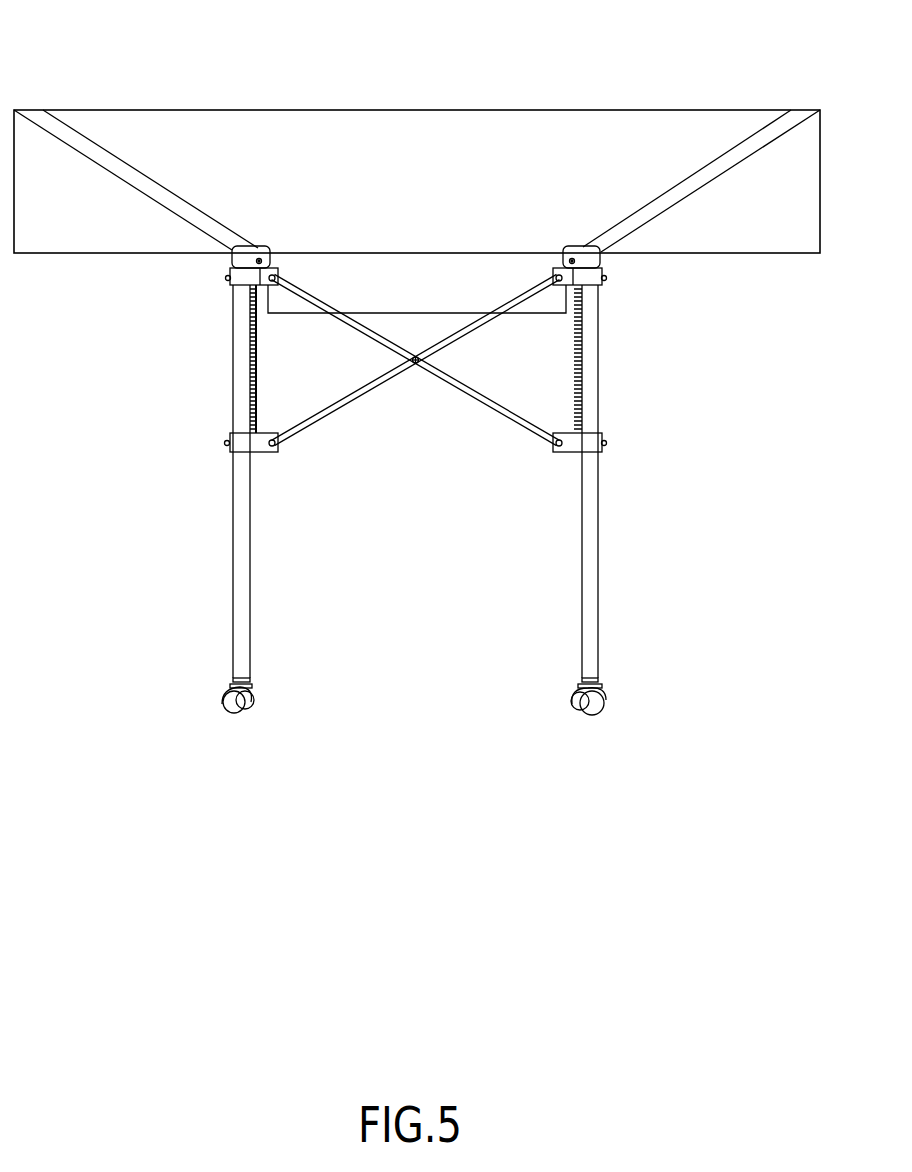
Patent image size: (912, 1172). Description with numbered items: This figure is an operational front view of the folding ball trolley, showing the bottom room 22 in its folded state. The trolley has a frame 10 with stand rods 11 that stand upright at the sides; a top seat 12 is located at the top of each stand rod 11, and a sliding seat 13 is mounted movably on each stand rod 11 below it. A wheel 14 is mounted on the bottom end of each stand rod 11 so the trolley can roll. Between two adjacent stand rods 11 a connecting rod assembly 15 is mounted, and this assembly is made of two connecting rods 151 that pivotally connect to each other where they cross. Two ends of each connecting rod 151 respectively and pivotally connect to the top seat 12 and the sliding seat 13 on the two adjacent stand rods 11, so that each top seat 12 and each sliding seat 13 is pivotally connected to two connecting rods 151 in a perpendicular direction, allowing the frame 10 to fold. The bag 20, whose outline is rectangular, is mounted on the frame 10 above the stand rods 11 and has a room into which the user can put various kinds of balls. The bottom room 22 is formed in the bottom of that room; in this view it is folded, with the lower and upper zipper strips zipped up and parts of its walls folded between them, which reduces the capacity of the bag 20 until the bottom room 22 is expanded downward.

The frame 10 is at (150, 483).
The stand rod 11 is at (242, 630).
The top seat 12 is at (240, 258).
The sliding seat 13 is at (256, 444).
The wheel 14 is at (236, 708).
The connecting rod assembly 15 is at (415, 403).
The connecting rod 151 is at (517, 416).
The bag 20 is at (118, 86).
The bottom room 22 is at (480, 295).